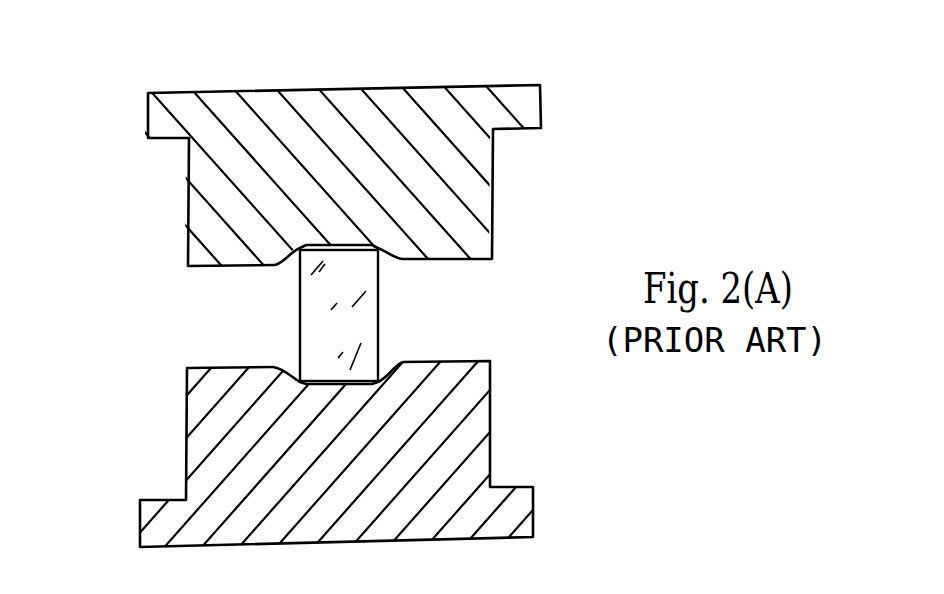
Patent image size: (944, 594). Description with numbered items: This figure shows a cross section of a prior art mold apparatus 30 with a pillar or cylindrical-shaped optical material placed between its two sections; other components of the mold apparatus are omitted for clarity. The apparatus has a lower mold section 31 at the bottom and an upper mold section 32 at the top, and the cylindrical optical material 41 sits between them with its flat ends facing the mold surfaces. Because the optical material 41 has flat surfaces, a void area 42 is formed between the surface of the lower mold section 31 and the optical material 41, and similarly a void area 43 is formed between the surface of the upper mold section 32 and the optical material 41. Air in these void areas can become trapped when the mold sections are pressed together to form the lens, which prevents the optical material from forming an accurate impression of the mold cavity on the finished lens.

The prior art mold apparatus 30 is at (104, 86).
The lower mold section 31 is at (187, 432).
The upper mold section 32 is at (188, 206).
The cylindrical optical material 41 is at (300, 317).
The void area 42 is at (365, 392).
The void area 43 is at (360, 233).